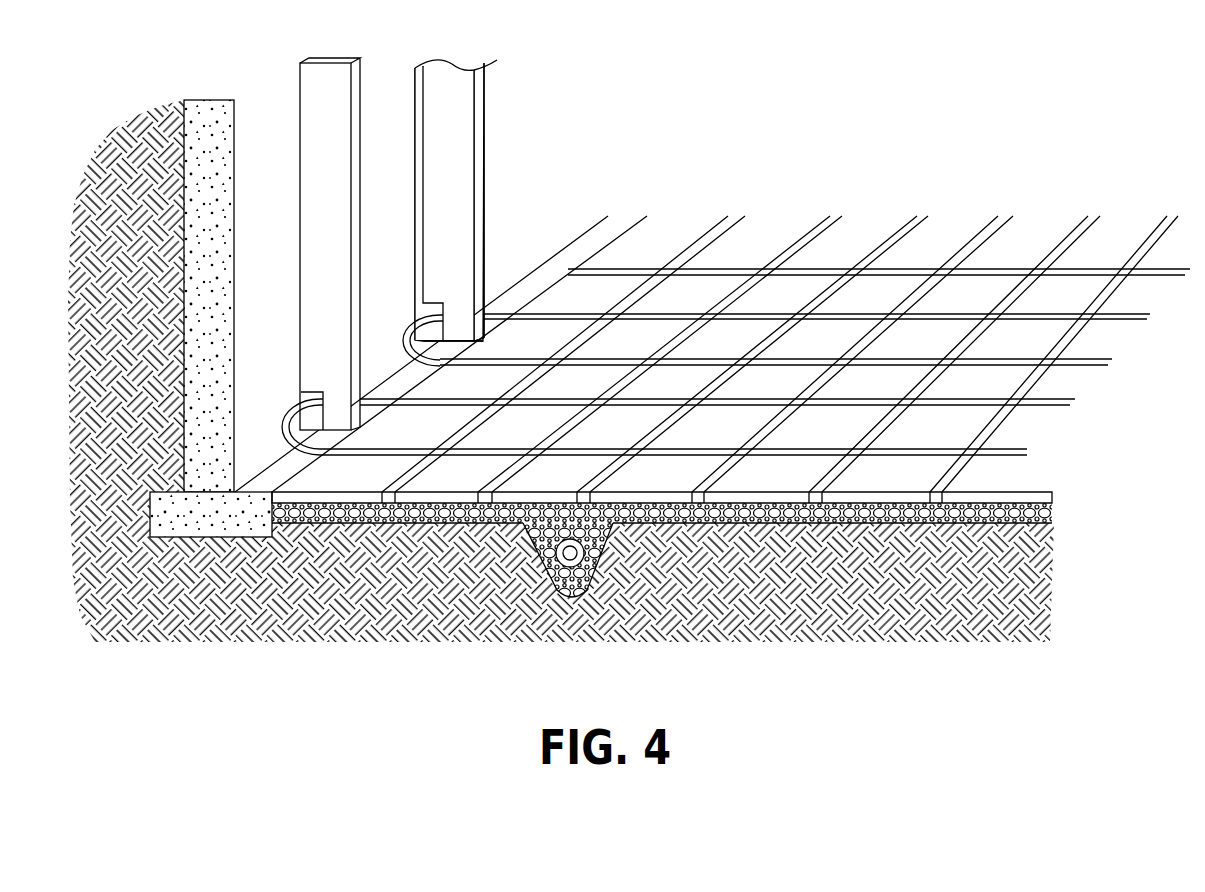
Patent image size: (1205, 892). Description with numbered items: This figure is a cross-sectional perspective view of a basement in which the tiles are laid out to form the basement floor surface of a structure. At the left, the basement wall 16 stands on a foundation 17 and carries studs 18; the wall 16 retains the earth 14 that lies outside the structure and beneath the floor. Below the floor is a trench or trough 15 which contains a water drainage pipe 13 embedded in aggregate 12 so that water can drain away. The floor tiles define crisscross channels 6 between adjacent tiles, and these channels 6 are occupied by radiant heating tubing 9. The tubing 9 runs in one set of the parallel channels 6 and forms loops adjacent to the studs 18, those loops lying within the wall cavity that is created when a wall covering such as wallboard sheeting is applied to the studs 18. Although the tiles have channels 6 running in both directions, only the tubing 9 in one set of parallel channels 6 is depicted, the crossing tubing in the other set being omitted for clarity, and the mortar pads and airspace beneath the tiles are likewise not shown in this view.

The channels 6 is at (721, 217).
The radiant heating tubing 9 is at (403, 339).
The aggregate 12 is at (484, 523).
The water drainage pipe 13 is at (544, 565).
The earth 14 is at (140, 128).
The trench 15 is at (562, 574).
The basement wall 16 is at (187, 212).
The foundation 17 is at (150, 518).
The studs 18 is at (362, 205).